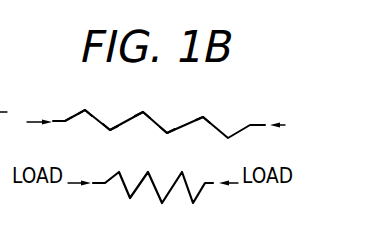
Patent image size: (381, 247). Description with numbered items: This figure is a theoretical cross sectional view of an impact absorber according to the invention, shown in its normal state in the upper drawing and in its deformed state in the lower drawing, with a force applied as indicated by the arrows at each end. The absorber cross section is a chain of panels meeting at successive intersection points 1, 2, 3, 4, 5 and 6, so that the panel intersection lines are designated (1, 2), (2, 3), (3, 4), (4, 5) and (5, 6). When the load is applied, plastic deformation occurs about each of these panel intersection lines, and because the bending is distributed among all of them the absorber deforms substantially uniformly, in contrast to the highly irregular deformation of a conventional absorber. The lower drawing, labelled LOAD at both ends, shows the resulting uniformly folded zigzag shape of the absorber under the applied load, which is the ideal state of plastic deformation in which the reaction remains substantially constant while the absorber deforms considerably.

The panel intersection line point 1 is at (65, 121).
The panel intersection line point 2 is at (85, 110).
The panel intersection line point 3 is at (110, 130).
The panel intersection line point 4 is at (143, 112).
The panel intersection line point 5 is at (167, 133).
The panel intersection line point 6 is at (203, 117).